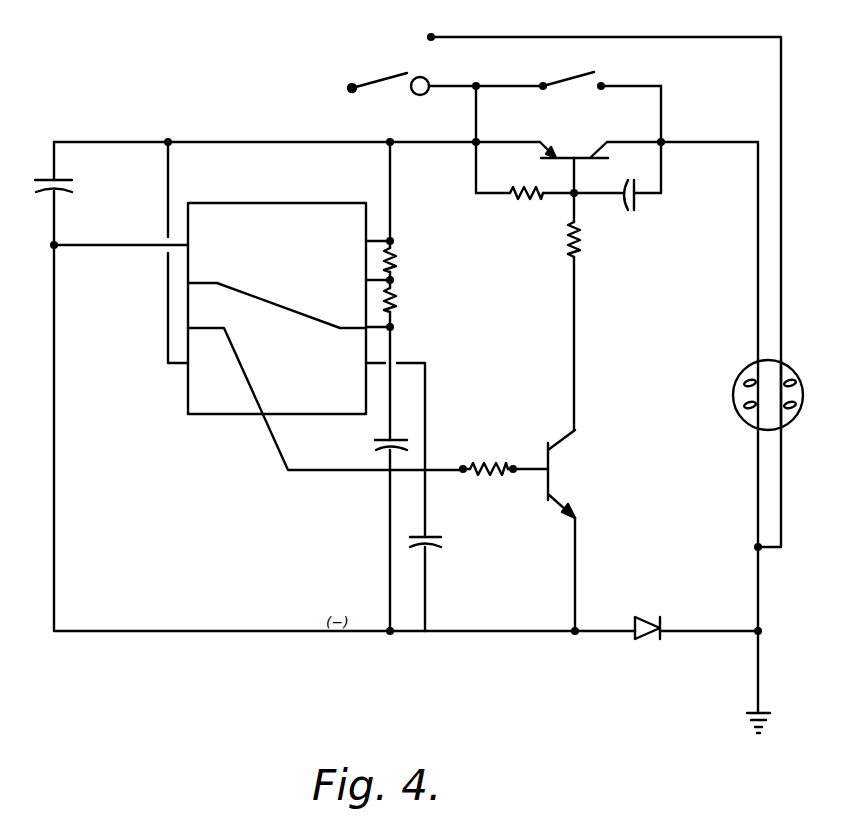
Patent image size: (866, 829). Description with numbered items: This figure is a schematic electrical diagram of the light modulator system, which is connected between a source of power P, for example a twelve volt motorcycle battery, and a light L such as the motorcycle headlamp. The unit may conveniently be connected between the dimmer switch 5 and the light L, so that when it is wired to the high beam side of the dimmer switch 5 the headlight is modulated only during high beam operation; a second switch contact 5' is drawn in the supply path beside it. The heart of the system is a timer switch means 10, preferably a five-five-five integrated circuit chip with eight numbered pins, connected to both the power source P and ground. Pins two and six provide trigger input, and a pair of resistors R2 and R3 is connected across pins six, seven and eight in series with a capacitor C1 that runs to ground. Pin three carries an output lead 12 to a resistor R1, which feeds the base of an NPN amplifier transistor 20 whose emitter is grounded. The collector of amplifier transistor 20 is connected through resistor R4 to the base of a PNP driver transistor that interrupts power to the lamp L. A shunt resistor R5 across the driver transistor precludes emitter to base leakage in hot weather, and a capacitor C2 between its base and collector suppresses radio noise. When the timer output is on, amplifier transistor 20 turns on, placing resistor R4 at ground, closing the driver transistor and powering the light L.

The source of power P is at (340, 78).
The dimmer switch 5 is at (388, 69).
The switch 5' is at (563, 68).
The timer switch means 10 is at (290, 179).
The output lead 12 is at (276, 452).
The amplifier transistor 20 is at (580, 474).
The resistor R1 is at (488, 474).
The resistor R2 is at (398, 261).
The resistor R3 is at (400, 304).
The resistor R4 is at (582, 244).
The shunt resistor R5 is at (532, 199).
The capacitor C1 is at (422, 443).
The capacitor C2 is at (640, 202).
The light L is at (802, 374).